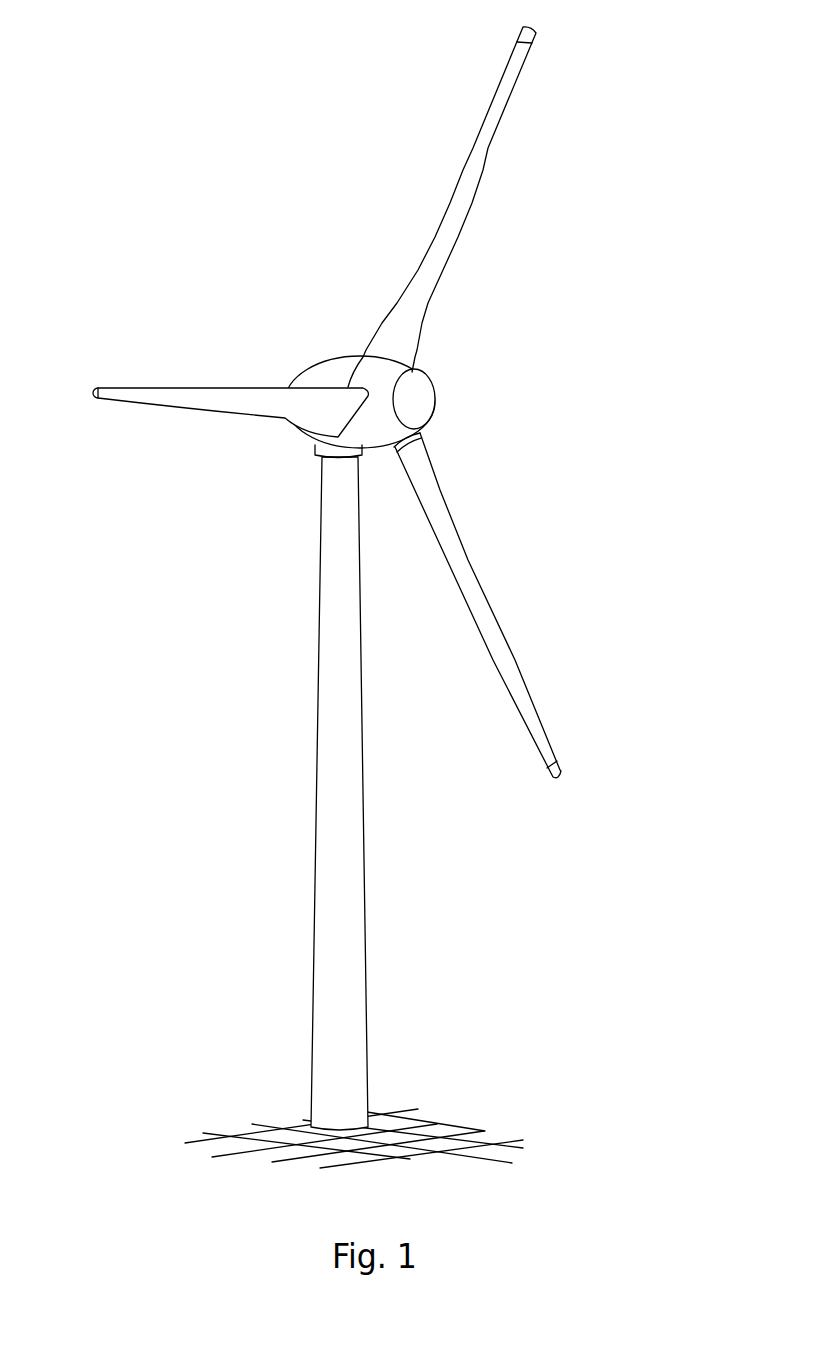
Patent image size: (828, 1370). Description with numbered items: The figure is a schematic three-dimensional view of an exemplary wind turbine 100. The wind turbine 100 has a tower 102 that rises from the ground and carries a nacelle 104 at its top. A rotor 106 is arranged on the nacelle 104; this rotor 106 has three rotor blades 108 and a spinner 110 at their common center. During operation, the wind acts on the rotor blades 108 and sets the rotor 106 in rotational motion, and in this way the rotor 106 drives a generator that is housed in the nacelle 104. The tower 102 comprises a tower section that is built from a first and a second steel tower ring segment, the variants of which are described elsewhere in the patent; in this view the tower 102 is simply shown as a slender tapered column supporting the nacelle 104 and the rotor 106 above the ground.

The wind turbine 100 is at (277, 527).
The tower 102 is at (345, 895).
The nacelle 104 is at (333, 373).
The rotor 106 is at (503, 323).
The rotor blades 108 is at (480, 155).
The spinner 110 is at (422, 400).